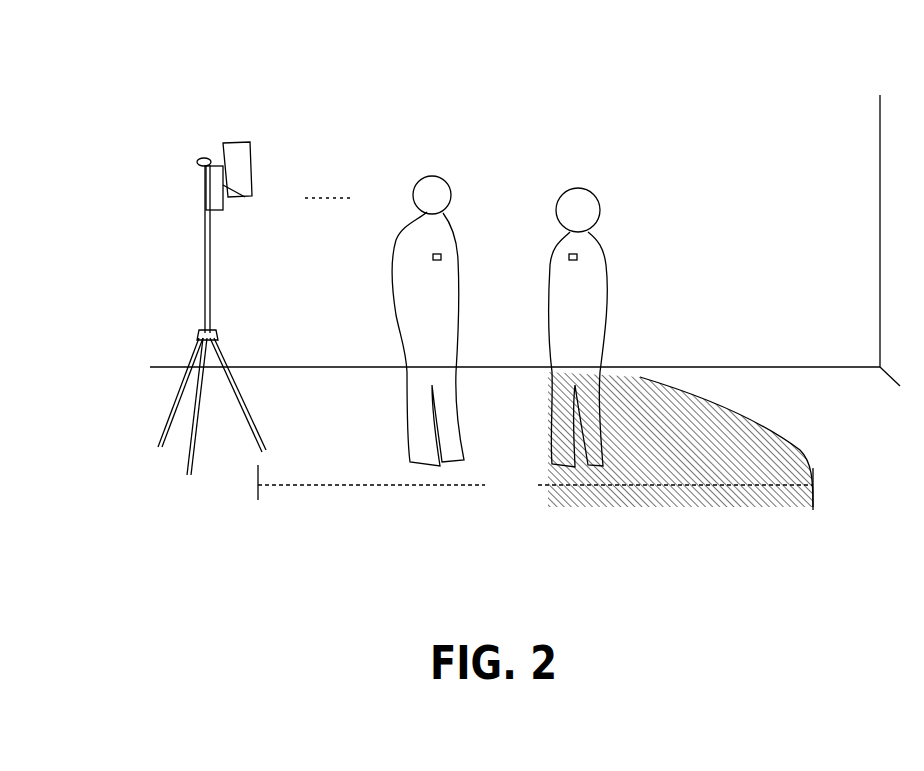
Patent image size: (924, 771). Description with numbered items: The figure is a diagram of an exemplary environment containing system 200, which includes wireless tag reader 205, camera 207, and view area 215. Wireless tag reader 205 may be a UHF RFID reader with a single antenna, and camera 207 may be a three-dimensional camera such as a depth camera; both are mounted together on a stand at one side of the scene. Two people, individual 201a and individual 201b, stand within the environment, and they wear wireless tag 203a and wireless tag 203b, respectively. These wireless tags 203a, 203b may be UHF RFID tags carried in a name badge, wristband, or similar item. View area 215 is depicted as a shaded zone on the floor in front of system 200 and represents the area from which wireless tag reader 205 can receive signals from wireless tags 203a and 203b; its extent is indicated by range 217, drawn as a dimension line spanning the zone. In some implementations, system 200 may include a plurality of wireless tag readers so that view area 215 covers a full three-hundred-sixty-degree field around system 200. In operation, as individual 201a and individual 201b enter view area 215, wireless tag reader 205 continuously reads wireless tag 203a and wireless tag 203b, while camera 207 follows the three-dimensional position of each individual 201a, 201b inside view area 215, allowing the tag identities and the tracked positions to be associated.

The system 200 is at (229, 102).
The wireless tag reader 205 is at (240, 137).
The camera 207 is at (245, 192).
The individual 201a is at (410, 222).
The individual 201b is at (575, 186).
The wireless tag 203a is at (438, 258).
The wireless tag 203b is at (573, 257).
The view area 215 is at (792, 455).
The range 217 is at (535, 487).